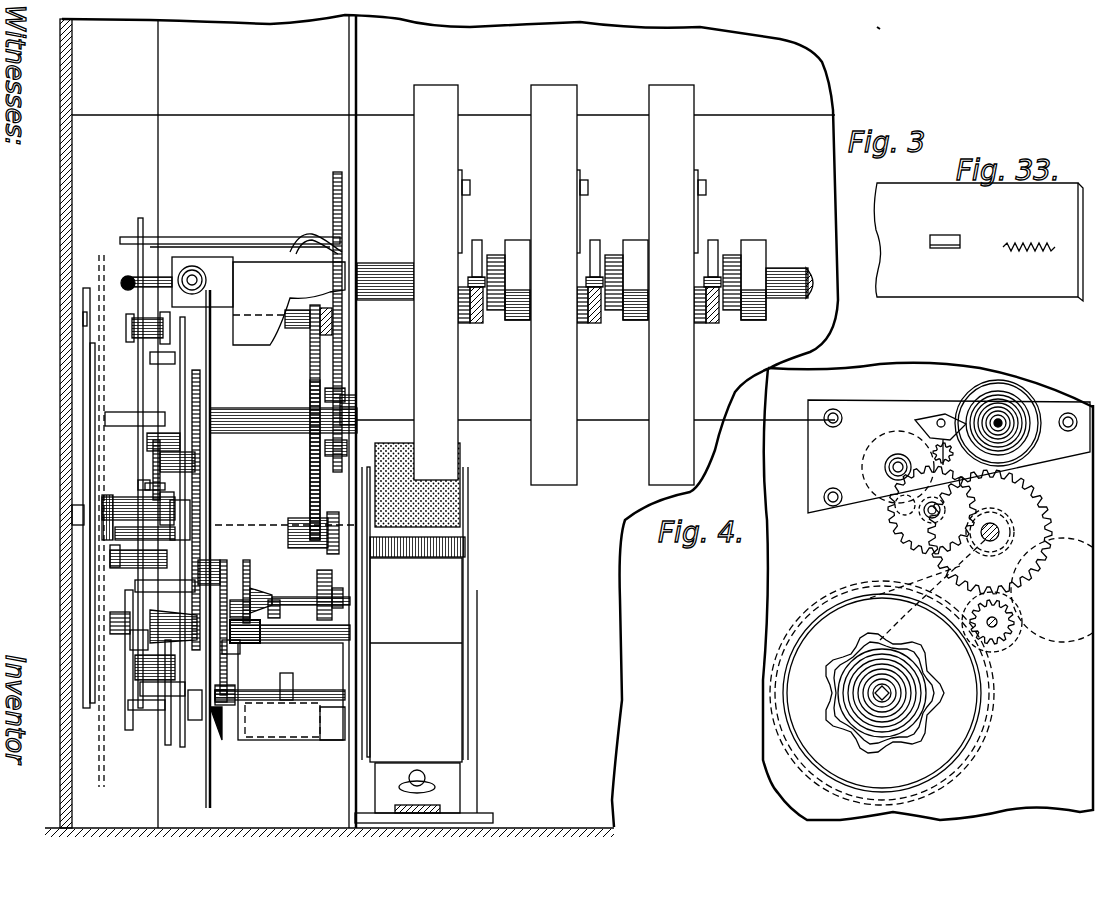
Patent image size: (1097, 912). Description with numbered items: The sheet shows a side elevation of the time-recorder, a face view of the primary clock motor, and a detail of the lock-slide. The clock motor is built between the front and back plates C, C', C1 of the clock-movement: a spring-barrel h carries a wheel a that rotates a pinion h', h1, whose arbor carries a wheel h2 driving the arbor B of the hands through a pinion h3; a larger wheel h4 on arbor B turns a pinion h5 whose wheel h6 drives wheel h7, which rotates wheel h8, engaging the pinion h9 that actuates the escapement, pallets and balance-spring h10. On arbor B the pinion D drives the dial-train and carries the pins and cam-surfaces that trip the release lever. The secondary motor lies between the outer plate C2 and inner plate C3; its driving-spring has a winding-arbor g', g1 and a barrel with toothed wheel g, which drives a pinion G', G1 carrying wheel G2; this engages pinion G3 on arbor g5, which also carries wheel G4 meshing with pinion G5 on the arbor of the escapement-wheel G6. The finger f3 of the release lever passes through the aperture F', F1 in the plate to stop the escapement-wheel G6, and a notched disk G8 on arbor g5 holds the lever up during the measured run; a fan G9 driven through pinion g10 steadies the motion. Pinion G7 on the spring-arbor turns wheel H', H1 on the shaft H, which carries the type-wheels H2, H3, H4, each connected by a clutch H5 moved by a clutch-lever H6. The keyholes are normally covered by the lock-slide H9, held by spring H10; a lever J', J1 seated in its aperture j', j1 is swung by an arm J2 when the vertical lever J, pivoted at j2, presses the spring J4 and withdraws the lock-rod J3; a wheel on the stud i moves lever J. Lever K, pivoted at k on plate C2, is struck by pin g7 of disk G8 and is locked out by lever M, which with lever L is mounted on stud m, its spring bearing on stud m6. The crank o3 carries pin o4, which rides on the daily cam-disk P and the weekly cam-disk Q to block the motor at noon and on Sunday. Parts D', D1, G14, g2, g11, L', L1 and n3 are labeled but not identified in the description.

In FIG. 3, the front plate C is at (42, 423).
In FIG. 4, the back plate C' is at (1058, 699).
In FIG. 4, the back plate C1 is at (1058, 699).
In FIG. 3, the outer wall or plate of secondary motor C2 is at (212, 785).
In FIG. 3, the inner plate or wall of secondary motor C3 is at (357, 130).
In FIG. 3, the pinion D is at (63, 513).
In FIG. 3, the bearing D' is at (198, 462).
In FIG. 3, the bearing D1 is at (195, 468).
In FIG. 3, the aperture F' is at (211, 532).
In FIG. 3, the aperture F1 is at (192, 560).
In FIG. 3, the pinion G' is at (304, 521).
In FIG. 3, the pinion G1 is at (295, 518).
In FIG. 3, the wheel G2 is at (310, 480).
In FIG. 3, the pinion G3 is at (362, 590).
In FIG. 3, the wheel G4 is at (292, 597).
In FIG. 3, the pinion G5 is at (258, 637).
In FIG. 3, the escapement-wheel G6 is at (238, 652).
In FIG. 3, the pinion G7 is at (357, 396).
In FIG. 3, the notched disk G8 is at (110, 620).
In FIG. 3, the fan or flutter wheel G9 is at (282, 706).
In FIG. 3, the shaft G14 is at (311, 595).
In FIG. 3, the toothed wheel g is at (300, 422).
In FIG. 3, the winding-arbor g' is at (135, 408).
In FIG. 3, the winding-arbor g1 is at (125, 412).
In FIG. 3, the cone pulley g2 is at (264, 591).
In FIG. 3, the arbor g5 is at (282, 604).
In FIG. 3, the pin g7 is at (250, 606).
In FIG. 3, the small pinion g10 is at (222, 736).
In FIG. 3, the cone pulley g11 is at (264, 591).
In FIG. 3, the shaft H is at (428, 287).
In FIG. 3, the wheel H' is at (398, 464).
In FIG. 3, the wheel H1 is at (333, 188).
In FIG. 3, the type-wheel H2 is at (414, 252).
In FIG. 3, the type-wheel H3 is at (577, 160).
In FIG. 3, the type-wheel H4 is at (694, 158).
In FIG. 3, the clutch H5 is at (474, 240).
In FIG. 3, the clutch-lever H6 is at (594, 252).
In FIG. 33, the lock-slide H9 is at (920, 220).
In FIG. 33, the spring H10 is at (1026, 255).
In FIG. 3, the stud i is at (145, 486).
In FIG. 3, the vertical lever J is at (170, 313).
In FIG. 3, the lever J' is at (316, 231).
In FIG. 3, the lever J1 is at (310, 236).
In FIG. 3, the arm J2 is at (138, 238).
In FIG. 3, the lock-rod J3 is at (124, 280).
In FIG. 3, the spring J4 is at (205, 237).
In FIG. 3, the aperture j' is at (128, 475).
In FIG. 33, the aperture j' is at (952, 229).
In FIG. 3, the aperture j1 is at (138, 482).
In FIG. 33, the aperture j1 is at (952, 240).
In FIG. 3, the pivot j2 is at (130, 640).
In FIG. 3, the lever K is at (132, 322).
In FIG. 3, the pivot k is at (172, 432).
In FIG. 3, the lever L is at (173, 532).
In FIG. 3, the lever L' is at (164, 692).
In FIG. 3, the lever L1 is at (170, 745).
In FIG. 3, the lever M is at (190, 530).
In FIG. 3, the stud m is at (163, 508).
In FIG. 3, the stud m6 is at (138, 517).
In FIG. 3, the bracket n3 is at (135, 590).
In FIG. 3, the arm or crank o3 is at (196, 690).
In FIG. 3, the pin o4 is at (140, 710).
In FIG. 3, the cam-disk P is at (140, 688).
In FIG. 3, the supplemental cam-disk Q is at (135, 665).
In FIG. 3, the finger or plate-lug f3 is at (210, 590).
In FIG. 4, the spring barrel h is at (882, 693).
In FIG. 4, the pinion h' is at (998, 622).
In FIG. 4, the pinion h1 is at (1006, 632).
In FIG. 4, the wheel h2 is at (1050, 590).
In FIG. 4, the pinion h3 is at (1012, 532).
In FIG. 4, the wheel h4 is at (1012, 498).
In FIG. 4, the pinion h5 is at (898, 512).
In FIG. 4, the wheel h6 is at (932, 510).
In FIG. 4, the wheel h7 is at (884, 467).
In FIG. 4, the wheel h8 is at (872, 492).
In FIG. 4, the pinion h9 is at (934, 453).
In FIG. 4, the escapement-wheel, pallets and balance-spring h10 is at (1022, 420).
In FIG. 4, the wheel a is at (923, 577).
In FIG. 4, the arbor B is at (876, 572).